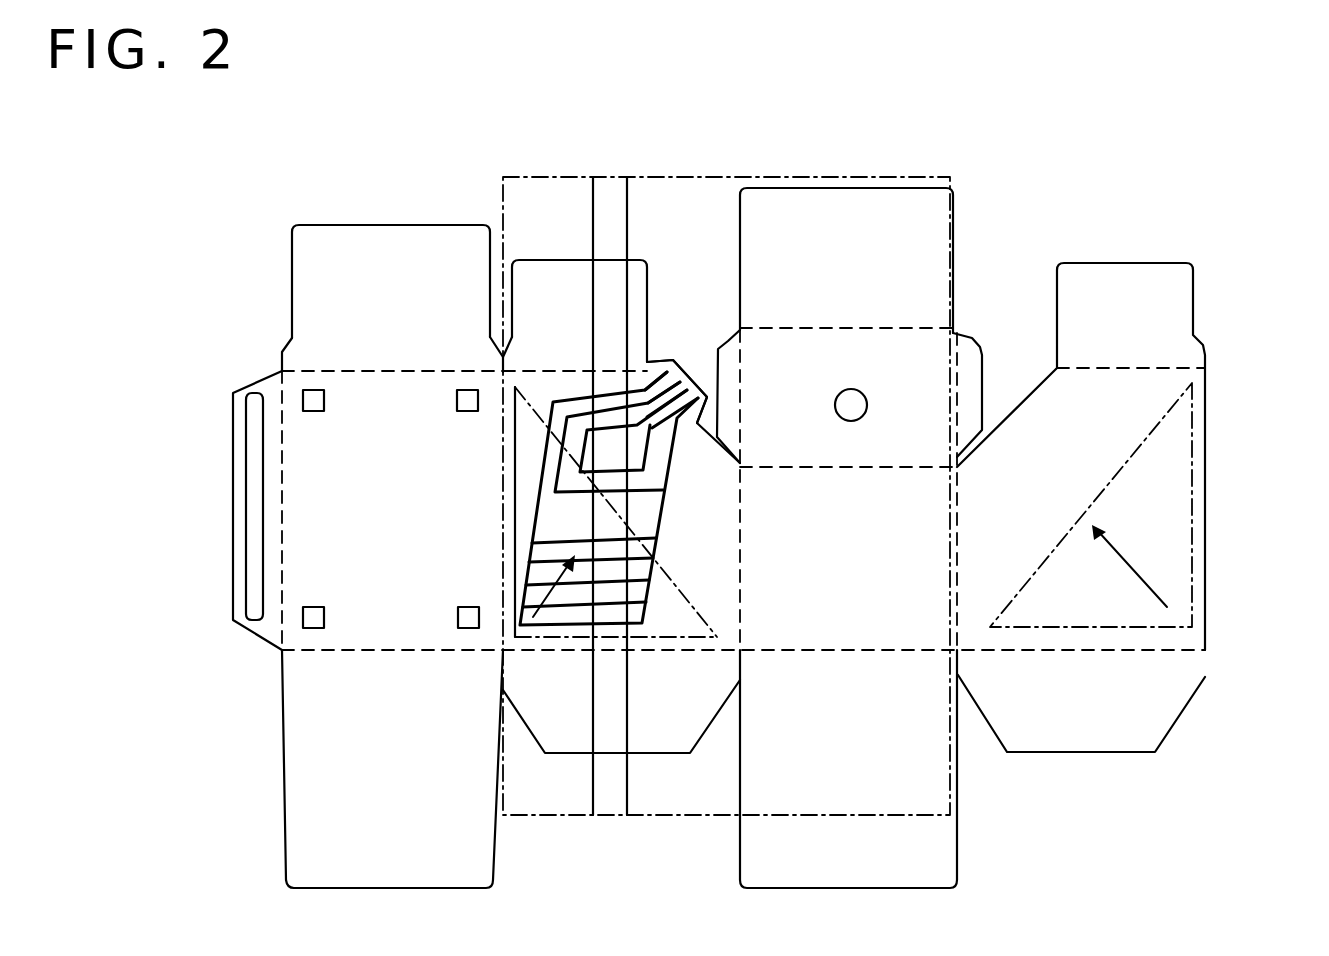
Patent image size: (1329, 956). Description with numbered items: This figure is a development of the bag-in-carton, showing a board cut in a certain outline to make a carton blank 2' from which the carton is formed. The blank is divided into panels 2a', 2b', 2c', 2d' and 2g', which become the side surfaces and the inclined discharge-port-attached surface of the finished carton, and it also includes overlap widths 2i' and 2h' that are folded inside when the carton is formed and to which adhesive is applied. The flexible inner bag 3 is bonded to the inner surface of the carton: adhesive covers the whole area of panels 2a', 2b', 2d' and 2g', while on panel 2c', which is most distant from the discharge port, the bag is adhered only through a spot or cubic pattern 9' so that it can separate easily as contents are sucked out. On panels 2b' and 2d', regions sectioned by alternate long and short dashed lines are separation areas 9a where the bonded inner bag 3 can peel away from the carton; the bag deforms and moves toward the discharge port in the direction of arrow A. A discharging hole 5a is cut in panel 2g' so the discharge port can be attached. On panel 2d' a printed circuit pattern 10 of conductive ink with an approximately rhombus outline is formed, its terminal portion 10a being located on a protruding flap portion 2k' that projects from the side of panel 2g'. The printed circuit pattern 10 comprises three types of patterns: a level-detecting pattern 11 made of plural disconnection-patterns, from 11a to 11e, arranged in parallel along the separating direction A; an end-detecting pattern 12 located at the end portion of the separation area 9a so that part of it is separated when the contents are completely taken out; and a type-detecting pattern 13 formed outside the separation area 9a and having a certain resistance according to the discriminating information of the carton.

The carton blank 2' is at (734, 499).
The inner bag 3 is at (722, 177).
The panel 2a' is at (894, 760).
The panel 2b' is at (1137, 507).
The panel 2c' is at (226, 506).
The panel 2d' is at (842, 465).
The panel 2g' is at (992, 362).
The overlap width 2h' is at (223, 541).
The overlap width 2i' is at (841, 321).
The protruding flap portion 2k' is at (677, 347).
The discharging hole 5a is at (851, 388).
The spot pattern 9' is at (391, 554).
The separation area 9a is at (677, 638).
The printed circuit pattern 10 is at (609, 496).
The terminal portion 10a is at (704, 408).
The level-detecting pattern 11 is at (560, 599).
The disconnection-pattern 11a is at (550, 637).
The disconnection-pattern 11e is at (541, 537).
The end-detecting pattern 12 is at (645, 495).
The type-detecting pattern 13 is at (633, 468).
The separating direction A is at (540, 578).